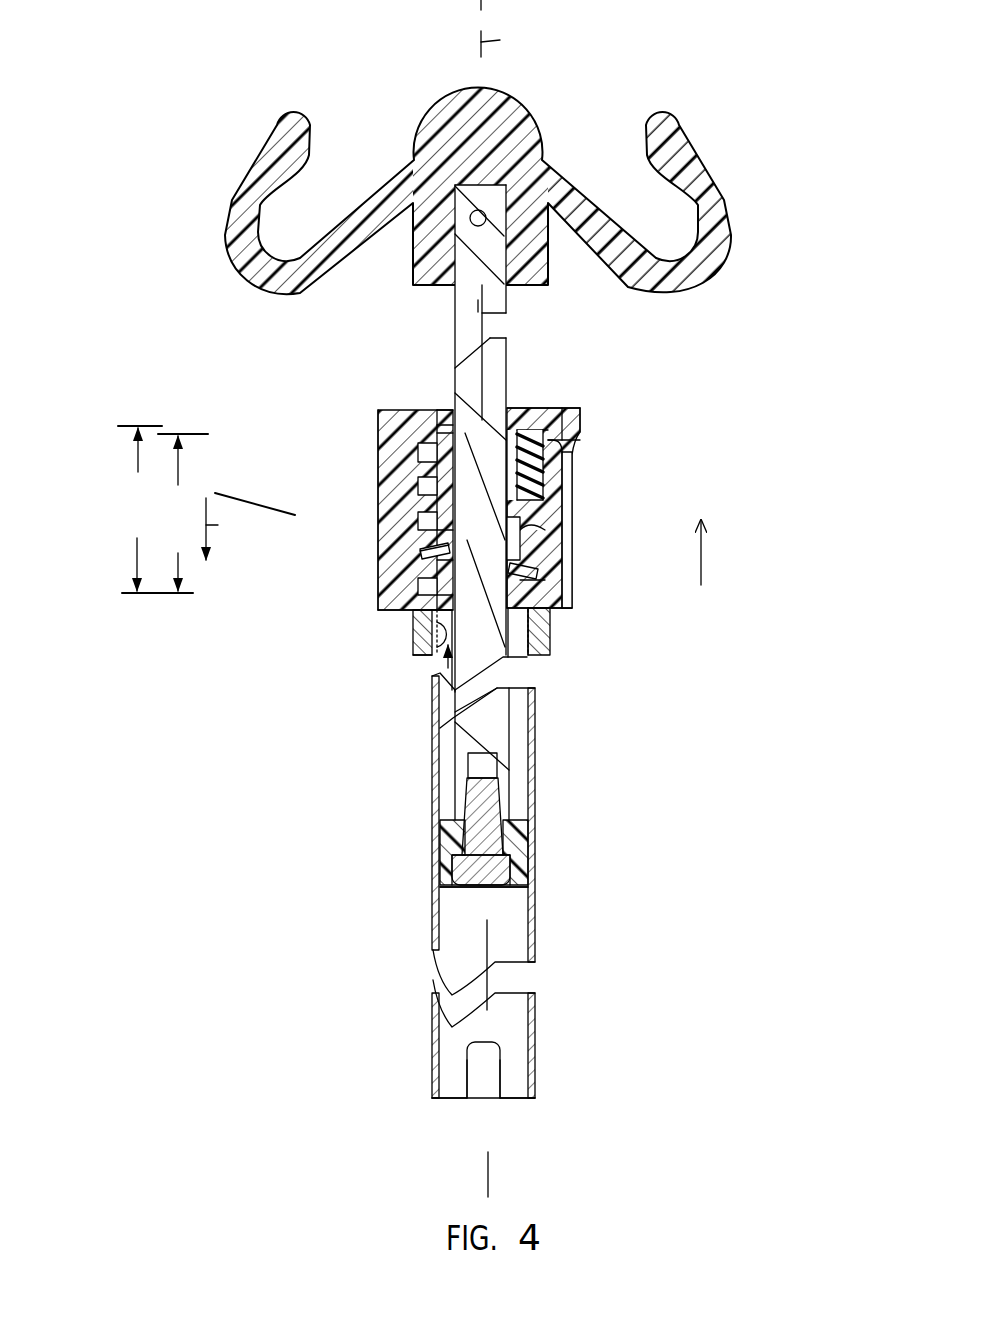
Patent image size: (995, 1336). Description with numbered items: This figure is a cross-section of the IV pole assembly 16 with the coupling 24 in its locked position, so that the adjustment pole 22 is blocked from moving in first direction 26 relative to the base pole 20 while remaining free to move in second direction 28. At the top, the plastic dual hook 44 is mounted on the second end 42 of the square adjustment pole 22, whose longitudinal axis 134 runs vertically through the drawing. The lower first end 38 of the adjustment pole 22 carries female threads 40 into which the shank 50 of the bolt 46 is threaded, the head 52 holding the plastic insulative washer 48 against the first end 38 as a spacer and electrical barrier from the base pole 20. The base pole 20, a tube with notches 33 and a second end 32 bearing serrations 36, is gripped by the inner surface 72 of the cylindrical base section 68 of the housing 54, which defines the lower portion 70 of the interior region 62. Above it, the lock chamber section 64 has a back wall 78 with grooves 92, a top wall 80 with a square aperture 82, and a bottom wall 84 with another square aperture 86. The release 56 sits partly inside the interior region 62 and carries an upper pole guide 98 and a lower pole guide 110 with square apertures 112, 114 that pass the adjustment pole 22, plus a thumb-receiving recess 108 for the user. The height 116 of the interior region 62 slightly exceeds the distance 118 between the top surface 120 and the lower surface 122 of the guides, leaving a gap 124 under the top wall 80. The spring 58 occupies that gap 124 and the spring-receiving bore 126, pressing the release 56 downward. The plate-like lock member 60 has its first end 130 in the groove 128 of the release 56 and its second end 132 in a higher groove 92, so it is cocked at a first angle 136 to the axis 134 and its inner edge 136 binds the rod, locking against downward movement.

The IV pole assembly 16 is at (148, 975).
The base pole 20 is at (543, 700).
The adjustment pole 22 is at (512, 350).
The coupling 24 is at (685, 467).
The first direction 26 is at (250, 526).
The second direction 28 is at (701, 570).
The second end 32 is at (527, 657).
The notches 33 is at (490, 1098).
The serrations 36 is at (548, 627).
The first end 38 is at (503, 772).
The female threads 40 is at (500, 802).
The second end 42 is at (490, 240).
The dual hook 44 is at (757, 187).
The bolt 46 is at (470, 895).
The washer 48 is at (512, 892).
The shank 50 is at (503, 837).
The head 52 is at (510, 870).
The housing 54 is at (345, 630).
The release 56 is at (590, 422).
The spring 58 is at (537, 437).
The lock member 60 is at (430, 562).
The interior region 62 is at (442, 424).
The lock chamber section 64 is at (360, 437).
The base section 68 is at (400, 648).
The lower portion 70 is at (440, 700).
The inner surface 72 is at (443, 655).
The back wall 78 is at (378, 472).
The top wall 80 is at (527, 408).
The square aperture 82 is at (520, 408).
The bottom wall 84 is at (545, 580).
The square aperture 86 is at (540, 600).
The grooves 92 is at (413, 552).
The upper pole guide 98 is at (445, 408).
The thumb-receiving recess 108 is at (558, 470).
The lower pole guide 110 is at (385, 592).
The square aperture 112 is at (395, 478).
The square aperture 114 is at (415, 610).
The height 116 is at (135, 557).
The distance 118 is at (178, 565).
The top surface 120 is at (478, 306).
The lower surface 122 is at (445, 597).
The gap 124 is at (578, 407).
The spring-receiving bore 126 is at (577, 435).
The groove 128 is at (545, 545).
The first end 130 is at (535, 537).
The second end 132 is at (418, 540).
The longitudinal axis 134 is at (511, 38).
The first angle 136 is at (248, 497).